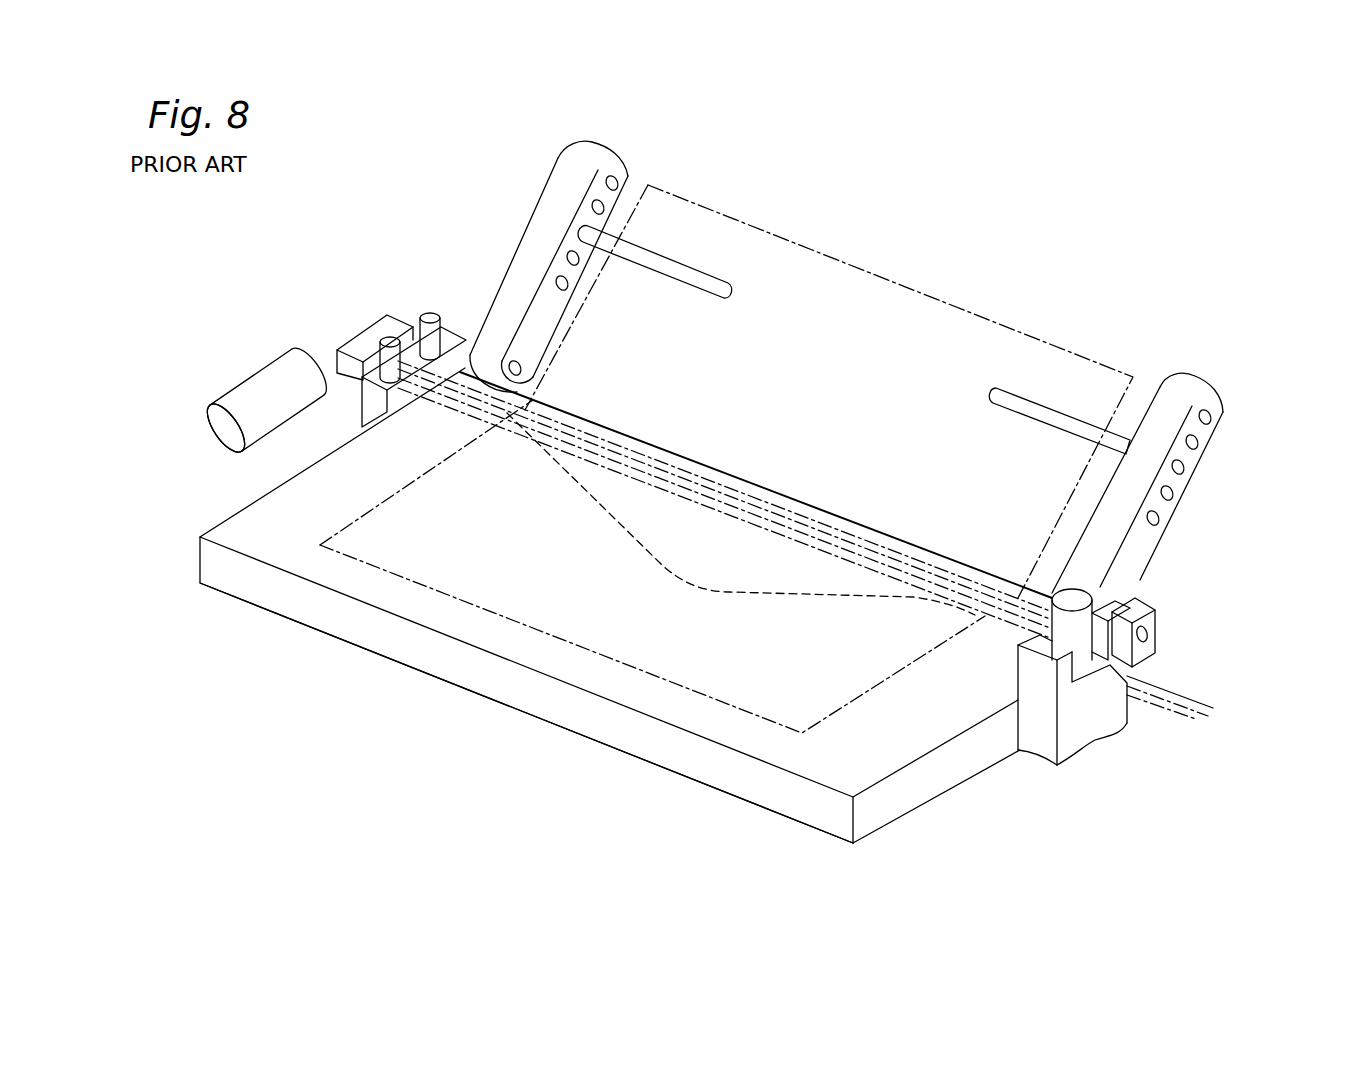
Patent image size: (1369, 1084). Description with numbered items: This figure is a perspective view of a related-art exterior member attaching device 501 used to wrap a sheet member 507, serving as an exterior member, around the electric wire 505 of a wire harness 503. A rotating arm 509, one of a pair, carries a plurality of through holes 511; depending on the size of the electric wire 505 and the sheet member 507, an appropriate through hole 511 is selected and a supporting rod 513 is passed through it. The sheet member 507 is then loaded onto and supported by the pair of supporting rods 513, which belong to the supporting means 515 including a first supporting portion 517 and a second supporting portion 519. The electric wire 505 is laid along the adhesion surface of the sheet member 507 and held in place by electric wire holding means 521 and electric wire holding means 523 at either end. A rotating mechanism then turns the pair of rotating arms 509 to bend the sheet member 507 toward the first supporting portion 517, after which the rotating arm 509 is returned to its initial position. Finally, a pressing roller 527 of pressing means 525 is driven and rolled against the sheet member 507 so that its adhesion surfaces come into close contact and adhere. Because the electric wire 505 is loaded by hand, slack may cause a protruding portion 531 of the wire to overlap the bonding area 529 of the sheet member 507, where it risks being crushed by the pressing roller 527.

The exterior member attaching device 501 is at (500, 179).
The wire harness 503 is at (738, 484).
The electric wire 505 is at (738, 485).
The sheet member 507 is at (878, 275).
The rotating arm 509 is at (600, 147).
The through hole 511 is at (604, 208).
The supporting rod 513 is at (703, 285).
The supporting means 515 is at (976, 795).
The first supporting portion 517 is at (810, 808).
The second supporting portion 519 is at (562, 136).
The electric wire holding means 521 is at (420, 298).
The electric wire holding means 523 is at (1002, 671).
The pressing means 525 is at (266, 347).
The pressing roller 527 is at (234, 388).
The bonding area 529 is at (478, 505).
The protruding portion 531 is at (783, 600).